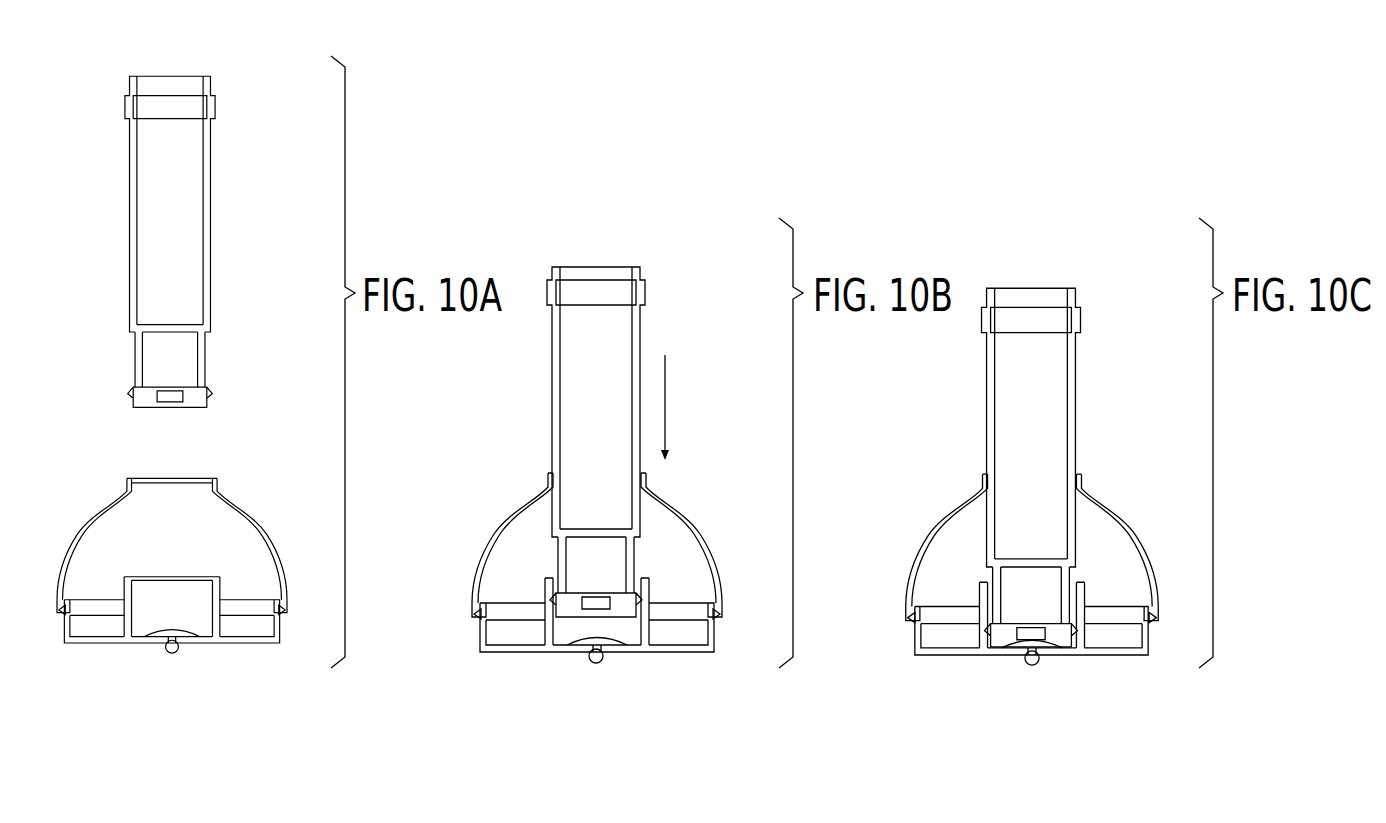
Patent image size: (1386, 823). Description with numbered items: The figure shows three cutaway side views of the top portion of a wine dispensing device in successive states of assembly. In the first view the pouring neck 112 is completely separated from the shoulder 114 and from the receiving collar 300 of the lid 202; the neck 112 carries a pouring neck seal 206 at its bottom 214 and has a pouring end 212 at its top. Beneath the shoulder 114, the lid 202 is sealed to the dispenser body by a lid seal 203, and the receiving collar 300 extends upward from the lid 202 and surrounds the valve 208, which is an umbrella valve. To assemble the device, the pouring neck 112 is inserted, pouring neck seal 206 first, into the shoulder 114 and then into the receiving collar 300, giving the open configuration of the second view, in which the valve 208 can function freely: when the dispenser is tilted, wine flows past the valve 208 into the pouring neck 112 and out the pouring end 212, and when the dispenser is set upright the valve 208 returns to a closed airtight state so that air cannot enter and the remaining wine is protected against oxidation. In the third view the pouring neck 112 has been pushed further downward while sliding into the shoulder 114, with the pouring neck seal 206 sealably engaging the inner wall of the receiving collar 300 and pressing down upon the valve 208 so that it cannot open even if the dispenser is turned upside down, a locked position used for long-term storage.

In FIG. 10A, the pouring neck 112 is at (213, 203).
In FIG. 10B, the pouring neck 112 is at (551, 380).
In FIG. 10C, the pouring neck 112 is at (1078, 383).
In FIG. 10A, the shoulder 114 is at (270, 532).
In FIG. 10B, the shoulder 114 is at (700, 530).
In FIG. 10C, the shoulder 114 is at (1130, 520).
In FIG. 10A, the lid 202 is at (240, 650).
In FIG. 10B, the lid 202 is at (518, 657).
In FIG. 10C, the lid 202 is at (1104, 661).
In FIG. 10A, the lid seal 203 is at (65, 627).
In FIG. 10B, the lid seal 203 is at (712, 637).
In FIG. 10C, the lid seal 203 is at (917, 633).
In FIG. 10A, the pouring neck seal 206 is at (205, 393).
In FIG. 10B, the pouring neck seal 206 is at (605, 596).
In FIG. 10C, the pouring neck seal 206 is at (1037, 620).
In FIG. 10A, the valve 208 is at (163, 626).
In FIG. 10B, the valve 208 is at (598, 666).
In FIG. 10C, the valve 208 is at (1031, 670).
In FIG. 10A, the pouring end 212 is at (210, 84).
In FIG. 10B, the pouring end 212 is at (643, 283).
In FIG. 10C, the pouring end 212 is at (1076, 303).
In FIG. 10A, the bottom 214 is at (203, 352).
In FIG. 10A, the receiving collar 300 is at (217, 593).
In FIG. 10B, the receiving collar 300 is at (645, 593).
In FIG. 10C, the receiving collar 300 is at (1080, 598).